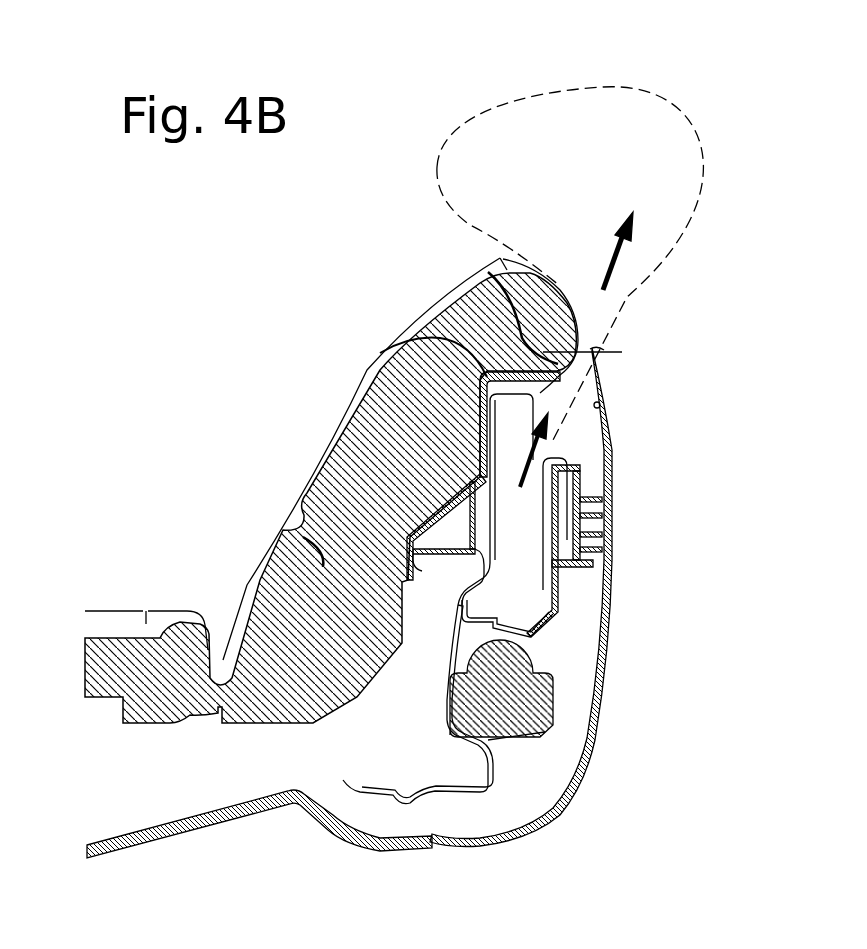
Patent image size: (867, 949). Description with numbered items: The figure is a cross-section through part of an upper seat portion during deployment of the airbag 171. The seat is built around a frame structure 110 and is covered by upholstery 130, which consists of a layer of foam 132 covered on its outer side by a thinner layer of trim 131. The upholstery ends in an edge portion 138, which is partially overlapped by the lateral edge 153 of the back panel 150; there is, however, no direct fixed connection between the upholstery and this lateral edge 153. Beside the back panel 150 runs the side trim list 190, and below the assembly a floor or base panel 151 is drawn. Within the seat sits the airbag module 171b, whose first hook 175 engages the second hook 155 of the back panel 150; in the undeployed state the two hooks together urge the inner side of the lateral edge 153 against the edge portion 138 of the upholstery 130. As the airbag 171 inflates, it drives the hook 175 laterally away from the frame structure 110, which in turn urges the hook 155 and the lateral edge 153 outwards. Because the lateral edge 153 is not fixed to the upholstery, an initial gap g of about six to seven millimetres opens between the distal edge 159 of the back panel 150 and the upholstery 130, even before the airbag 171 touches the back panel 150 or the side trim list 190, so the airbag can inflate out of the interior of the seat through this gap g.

The frame structure 110 is at (473, 793).
The upholstery 130 is at (205, 590).
The trim 131 is at (330, 437).
The foam 132 is at (292, 530).
The edge portion 138 is at (490, 273).
The back panel 150 is at (570, 800).
The floor panel 151 is at (127, 833).
The lateral edge 153 is at (600, 407).
The second hook 155 is at (593, 530).
The distal edge 159 is at (600, 350).
The airbag 171 is at (540, 110).
The airbag module 171b is at (520, 703).
The first hook 175 is at (577, 457).
The side trim list 190 is at (407, 353).
The gap g is at (577, 350).